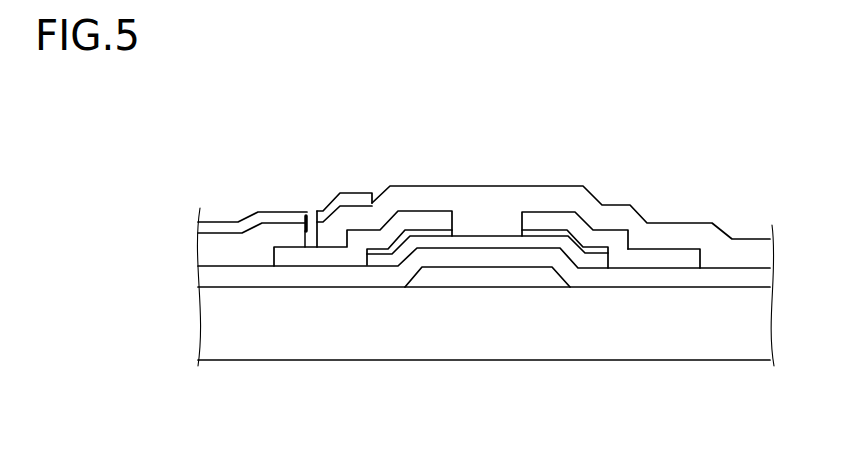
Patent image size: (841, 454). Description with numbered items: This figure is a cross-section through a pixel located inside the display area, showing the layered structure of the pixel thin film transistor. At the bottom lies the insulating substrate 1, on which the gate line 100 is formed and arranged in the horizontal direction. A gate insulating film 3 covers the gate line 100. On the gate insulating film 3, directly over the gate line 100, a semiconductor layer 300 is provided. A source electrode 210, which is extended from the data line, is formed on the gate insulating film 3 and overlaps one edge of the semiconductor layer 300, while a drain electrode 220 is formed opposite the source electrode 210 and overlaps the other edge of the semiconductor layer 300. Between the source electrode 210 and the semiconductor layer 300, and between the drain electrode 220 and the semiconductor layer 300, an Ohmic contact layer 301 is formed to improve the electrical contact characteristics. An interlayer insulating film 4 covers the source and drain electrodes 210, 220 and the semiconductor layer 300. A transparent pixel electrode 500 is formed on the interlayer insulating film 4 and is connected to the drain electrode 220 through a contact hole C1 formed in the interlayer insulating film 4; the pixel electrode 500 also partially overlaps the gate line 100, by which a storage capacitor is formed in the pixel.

The insulating substrate 1 is at (600, 353).
The gate insulating film 3 is at (713, 281).
The gate line 100 is at (480, 283).
The source electrode 210 is at (678, 258).
The drain electrode 220 is at (306, 252).
The semiconductor layer 300 is at (592, 262).
The Ohmic contact layer 301 is at (553, 230).
The transparent pixel electrode 500 is at (270, 212).
The interlayer insulating film 4 is at (750, 247).
The contact hole C1 is at (304, 212).